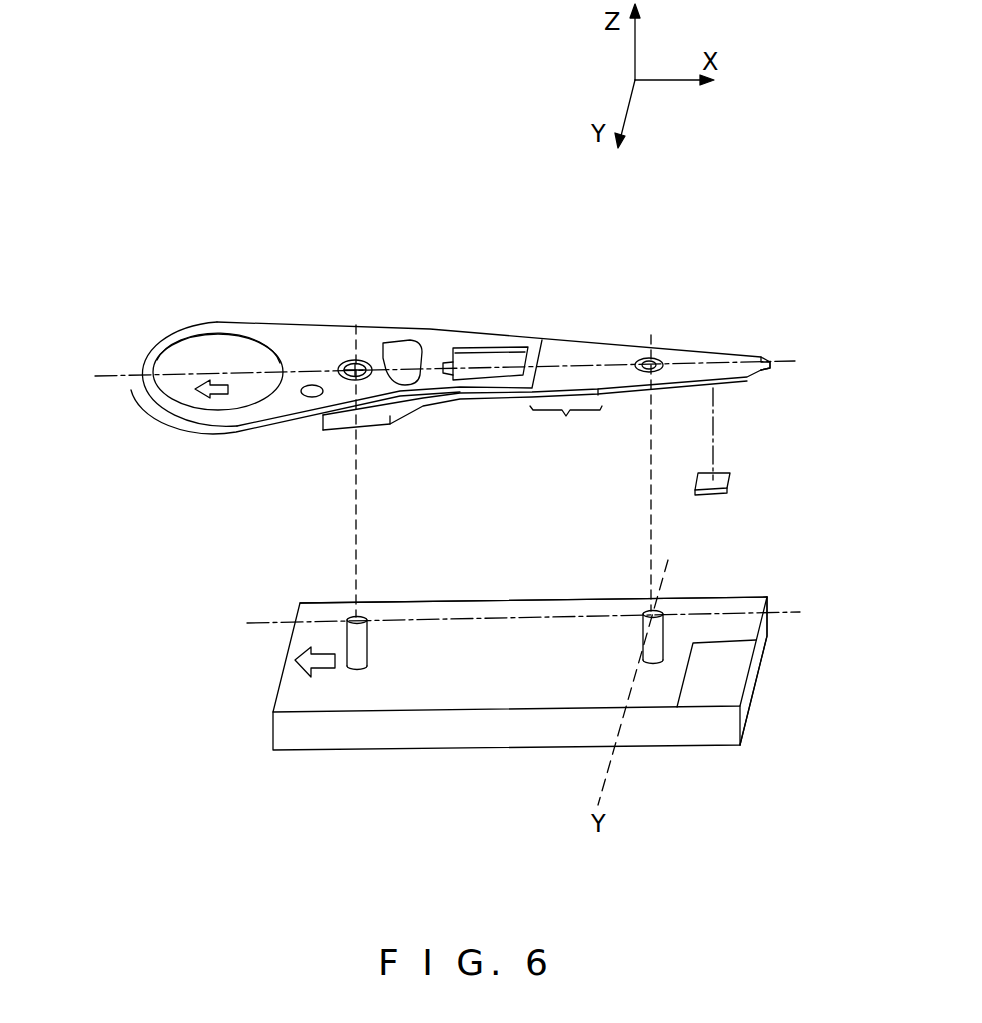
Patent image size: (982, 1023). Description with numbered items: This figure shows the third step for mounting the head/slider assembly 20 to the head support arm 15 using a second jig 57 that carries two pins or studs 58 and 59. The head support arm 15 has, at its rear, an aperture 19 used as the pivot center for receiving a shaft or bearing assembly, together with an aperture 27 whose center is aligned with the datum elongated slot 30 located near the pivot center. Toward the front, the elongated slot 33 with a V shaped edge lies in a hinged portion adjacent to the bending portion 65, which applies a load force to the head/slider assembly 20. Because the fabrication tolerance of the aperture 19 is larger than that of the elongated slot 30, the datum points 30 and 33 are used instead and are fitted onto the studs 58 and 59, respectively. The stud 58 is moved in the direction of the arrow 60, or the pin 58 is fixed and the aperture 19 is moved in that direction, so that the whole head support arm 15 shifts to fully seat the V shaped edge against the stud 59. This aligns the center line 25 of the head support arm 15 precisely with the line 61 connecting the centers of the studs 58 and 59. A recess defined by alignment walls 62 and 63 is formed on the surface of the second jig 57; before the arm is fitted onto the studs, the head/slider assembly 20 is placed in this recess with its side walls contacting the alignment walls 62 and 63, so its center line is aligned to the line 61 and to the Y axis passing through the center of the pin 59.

The head support arm 15 is at (270, 322).
The aperture 19 is at (178, 350).
The head/slider assembly 20 is at (730, 482).
The center line 25 is at (780, 360).
The aperture 27 is at (345, 360).
The elongated slot 30 is at (367, 360).
The elongated slot 33 is at (647, 362).
The second jig 57 is at (523, 750).
The stud 58 is at (363, 643).
The stud 59 is at (637, 627).
The arrow 60 is at (212, 398).
The line 61 is at (783, 610).
The alignment wall 62 is at (763, 650).
The alignment wall 63 is at (677, 710).
The bending portion 65 is at (542, 413).